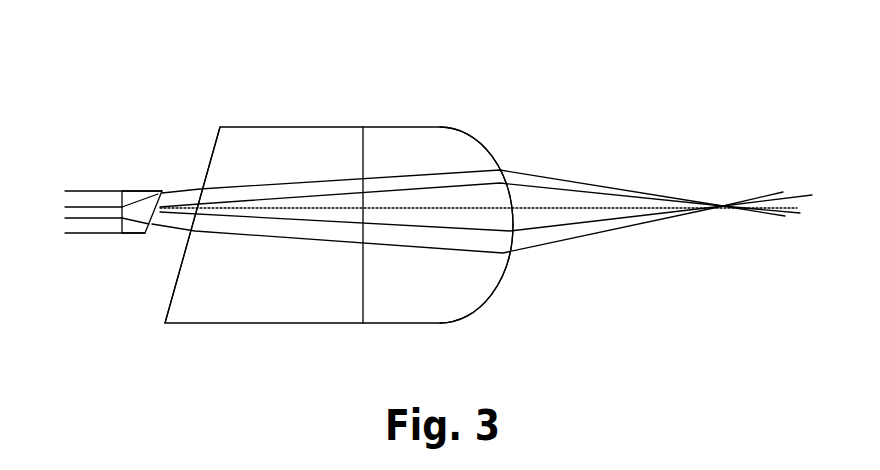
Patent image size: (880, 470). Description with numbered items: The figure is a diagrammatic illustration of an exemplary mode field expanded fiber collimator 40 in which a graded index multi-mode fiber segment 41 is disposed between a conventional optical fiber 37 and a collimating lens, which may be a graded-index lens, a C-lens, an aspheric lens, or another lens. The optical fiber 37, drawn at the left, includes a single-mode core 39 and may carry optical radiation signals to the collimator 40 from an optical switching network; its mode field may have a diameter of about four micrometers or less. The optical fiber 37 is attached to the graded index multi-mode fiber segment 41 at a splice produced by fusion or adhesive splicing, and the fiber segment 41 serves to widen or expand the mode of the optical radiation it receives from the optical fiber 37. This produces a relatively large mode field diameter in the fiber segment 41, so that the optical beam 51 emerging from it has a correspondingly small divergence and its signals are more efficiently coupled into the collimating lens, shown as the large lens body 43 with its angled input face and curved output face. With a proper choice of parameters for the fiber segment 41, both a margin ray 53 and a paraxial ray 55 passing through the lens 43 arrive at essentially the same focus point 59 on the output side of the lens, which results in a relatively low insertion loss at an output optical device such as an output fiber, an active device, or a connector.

The optical fiber 37 is at (96, 227).
The single-mode core 39 is at (90, 212).
The mode field expanded fiber collimator 40 is at (487, 64).
The graded index multi-mode fiber segment 41 is at (133, 190).
The lens 43 is at (283, 163).
The optical beam 51 is at (157, 228).
The margin ray 53 is at (503, 165).
The paraxial ray 55 is at (515, 234).
The focus point 59 is at (723, 207).